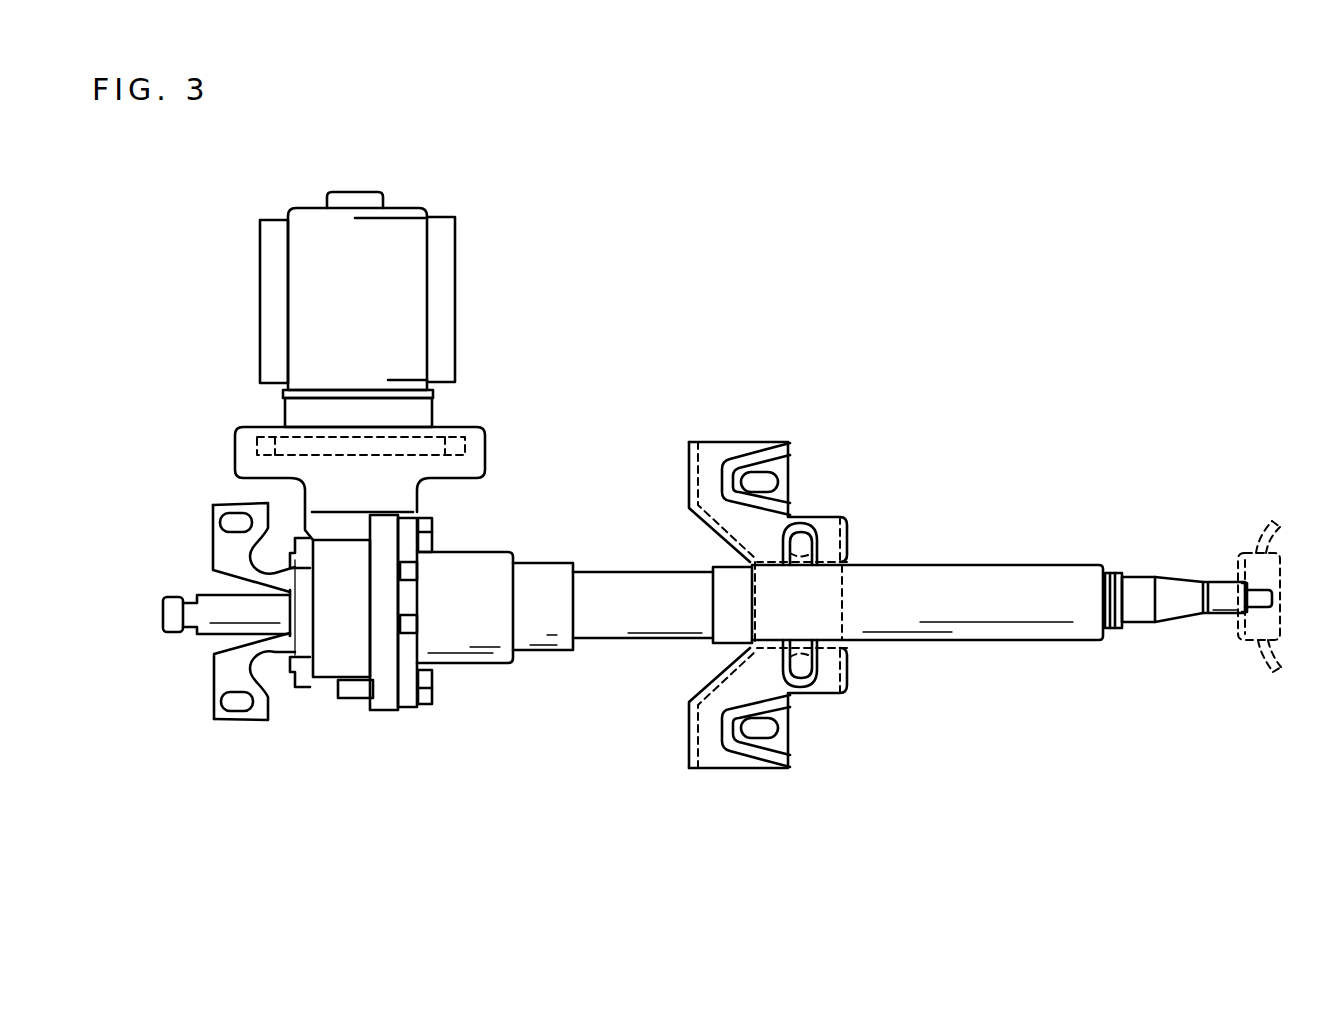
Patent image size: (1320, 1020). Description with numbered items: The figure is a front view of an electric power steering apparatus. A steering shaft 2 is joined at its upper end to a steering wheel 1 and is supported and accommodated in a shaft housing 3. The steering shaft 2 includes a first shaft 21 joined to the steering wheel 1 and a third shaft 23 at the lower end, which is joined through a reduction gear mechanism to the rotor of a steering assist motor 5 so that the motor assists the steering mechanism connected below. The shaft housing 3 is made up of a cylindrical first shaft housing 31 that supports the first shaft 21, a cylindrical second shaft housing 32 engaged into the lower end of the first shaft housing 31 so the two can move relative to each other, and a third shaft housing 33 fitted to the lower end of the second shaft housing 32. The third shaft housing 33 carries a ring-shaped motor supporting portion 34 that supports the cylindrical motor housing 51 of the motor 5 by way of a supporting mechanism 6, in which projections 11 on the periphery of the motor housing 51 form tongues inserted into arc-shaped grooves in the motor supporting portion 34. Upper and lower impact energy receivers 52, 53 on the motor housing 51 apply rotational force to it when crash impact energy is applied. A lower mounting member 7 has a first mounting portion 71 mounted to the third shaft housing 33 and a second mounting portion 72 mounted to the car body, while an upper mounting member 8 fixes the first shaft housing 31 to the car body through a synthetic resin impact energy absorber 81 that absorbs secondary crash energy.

The steering wheel 1 is at (1256, 552).
The steering shaft 2 is at (1188, 599).
The first shaft 21 is at (1135, 617).
The third shaft 23 is at (200, 640).
The shaft housing 3 is at (636, 546).
The first shaft housing 31 is at (973, 641).
The second shaft housing 32 is at (618, 641).
The third shaft housing 33 is at (465, 662).
The motor supporting portion 34 is at (370, 454).
The steering assist motor 5 is at (354, 289).
The motor housing 51 is at (300, 255).
The upper impact energy receiver 52 is at (452, 270).
The lower impact energy receiver 53 is at (262, 318).
The supporting mechanism 6 is at (465, 433).
The lower mounting member 7 is at (243, 615).
The first mounting portion 71 is at (308, 700).
The second mounting portion 72 is at (233, 723).
The upper mounting member 8 is at (776, 563).
The impact energy absorber 81 is at (791, 457).
The projections 11 is at (240, 445).